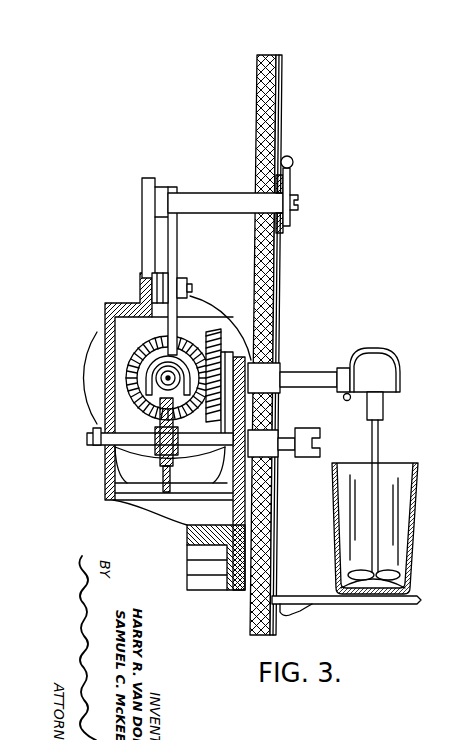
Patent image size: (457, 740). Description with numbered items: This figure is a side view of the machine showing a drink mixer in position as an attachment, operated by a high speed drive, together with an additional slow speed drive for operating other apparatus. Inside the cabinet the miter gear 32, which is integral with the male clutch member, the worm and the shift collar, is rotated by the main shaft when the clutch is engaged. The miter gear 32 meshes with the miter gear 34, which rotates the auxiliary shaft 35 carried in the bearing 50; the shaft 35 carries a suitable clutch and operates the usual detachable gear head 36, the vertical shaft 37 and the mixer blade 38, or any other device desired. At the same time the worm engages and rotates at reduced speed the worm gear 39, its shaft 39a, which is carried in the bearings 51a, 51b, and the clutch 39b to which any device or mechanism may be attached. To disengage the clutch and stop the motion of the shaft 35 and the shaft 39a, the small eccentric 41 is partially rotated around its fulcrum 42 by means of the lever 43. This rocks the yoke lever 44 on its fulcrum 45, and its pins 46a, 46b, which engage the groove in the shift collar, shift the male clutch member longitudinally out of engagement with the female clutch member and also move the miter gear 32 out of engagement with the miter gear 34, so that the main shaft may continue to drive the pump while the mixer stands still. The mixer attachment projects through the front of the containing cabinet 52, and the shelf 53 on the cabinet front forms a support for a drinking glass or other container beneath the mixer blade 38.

The miter gear 32 is at (106, 322).
The miter gear 34 is at (226, 352).
The shaft 35 is at (319, 373).
The detachable gear head 36 is at (379, 352).
The vertical shaft 37 is at (380, 450).
The mixer blade 38 is at (400, 578).
The worm gear 39 is at (158, 483).
The shaft 39a is at (300, 457).
The clutch 39b is at (333, 409).
The eccentric 41 is at (215, 197).
The fulcrum 42 is at (300, 207).
The lever 43 is at (296, 172).
The yoke lever 44 is at (181, 264).
The fulcrum 45 is at (193, 292).
The pin 46a is at (168, 402).
The pin 46b is at (100, 452).
The bearing 50 is at (268, 383).
The bearing 51a is at (96, 470).
The bearing 51b is at (266, 448).
The front of the containing cabinet 52 is at (283, 283).
The shelf 53 is at (396, 604).